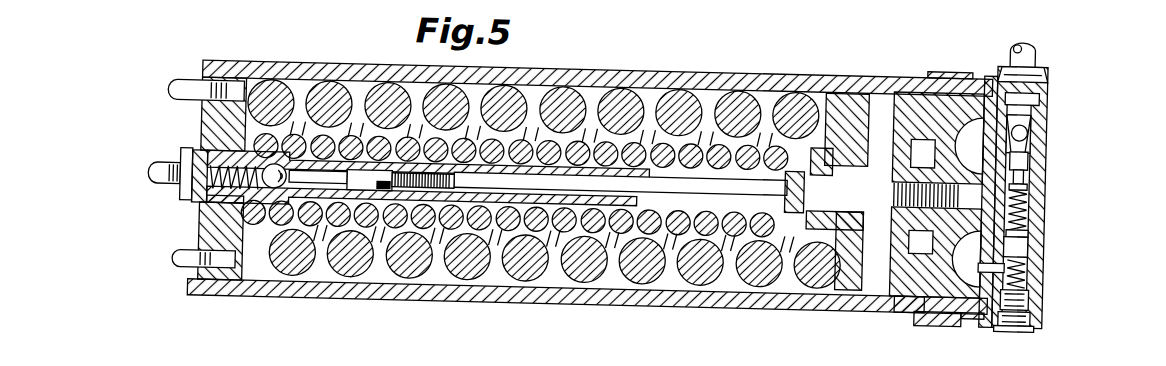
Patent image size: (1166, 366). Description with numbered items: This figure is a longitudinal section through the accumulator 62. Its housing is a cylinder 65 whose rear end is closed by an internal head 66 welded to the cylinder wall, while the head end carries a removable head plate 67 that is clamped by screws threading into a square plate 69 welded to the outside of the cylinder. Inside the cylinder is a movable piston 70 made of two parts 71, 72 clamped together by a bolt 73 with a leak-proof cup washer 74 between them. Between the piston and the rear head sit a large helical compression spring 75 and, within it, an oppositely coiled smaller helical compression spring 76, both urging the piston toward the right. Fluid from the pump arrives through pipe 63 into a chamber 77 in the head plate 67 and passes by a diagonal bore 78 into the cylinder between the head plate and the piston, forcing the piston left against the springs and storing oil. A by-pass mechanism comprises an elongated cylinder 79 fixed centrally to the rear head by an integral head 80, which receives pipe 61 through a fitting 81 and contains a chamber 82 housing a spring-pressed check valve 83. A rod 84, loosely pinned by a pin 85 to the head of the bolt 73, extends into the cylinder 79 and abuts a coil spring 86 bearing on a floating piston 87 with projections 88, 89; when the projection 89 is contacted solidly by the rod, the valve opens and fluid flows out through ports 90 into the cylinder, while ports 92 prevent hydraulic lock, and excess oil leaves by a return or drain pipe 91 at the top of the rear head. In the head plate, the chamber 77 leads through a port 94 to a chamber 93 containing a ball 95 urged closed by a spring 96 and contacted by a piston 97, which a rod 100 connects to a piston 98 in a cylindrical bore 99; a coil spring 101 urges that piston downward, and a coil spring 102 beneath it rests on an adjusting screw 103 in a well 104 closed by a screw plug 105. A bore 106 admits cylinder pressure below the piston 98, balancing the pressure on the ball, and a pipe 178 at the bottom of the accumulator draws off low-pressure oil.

The pipe 61 is at (168, 171).
The accumulator 62 is at (828, 60).
The pipe 63 is at (1032, 37).
The cylinder 65 is at (640, 70).
The internal head 66 is at (222, 128).
The head plate 67 is at (1040, 149).
The square plate 69 is at (940, 306).
The movable piston 70 is at (913, 276).
The piston part 71 is at (847, 247).
The piston part 72 is at (965, 201).
The bolt 73 is at (860, 179).
The cup washer 74 is at (953, 302).
The large helical compression spring 75 is at (742, 87).
The smaller helical compression spring 76 is at (690, 254).
The chamber 77 is at (1043, 61).
The diagonal bore 78 is at (992, 71).
The elongated cylinder 79 is at (527, 254).
The integral head 80 is at (205, 203).
The fitting 81 is at (183, 199).
The chamber 82 is at (210, 200).
The check valve 83 is at (277, 185).
The rod 84 is at (586, 181).
The pin 85 is at (780, 248).
The coil spring 86 is at (455, 262).
The floating piston 87 is at (387, 195).
The projection 88 is at (323, 192).
The projection 89 is at (417, 188).
The ports 90 is at (318, 179).
The return or drain pipe 91 is at (190, 83).
The ports 92 is at (357, 189).
The chamber 93 is at (1038, 123).
The port 94 is at (1032, 87).
The ball 95 is at (1024, 113).
The spring 96 is at (1027, 133).
The piston 97 is at (1020, 140).
The piston 98 is at (1022, 227).
The cylindrical bore 99 is at (1027, 213).
The rod 100 is at (1023, 178).
The coil spring 101 is at (1025, 160).
The coil spring 102 is at (1022, 250).
The adjusting screw 103 is at (1027, 277).
The well 104 is at (1027, 297).
The screw plug 105 is at (1027, 312).
The bore 106 is at (993, 253).
The pipe 178 is at (185, 266).